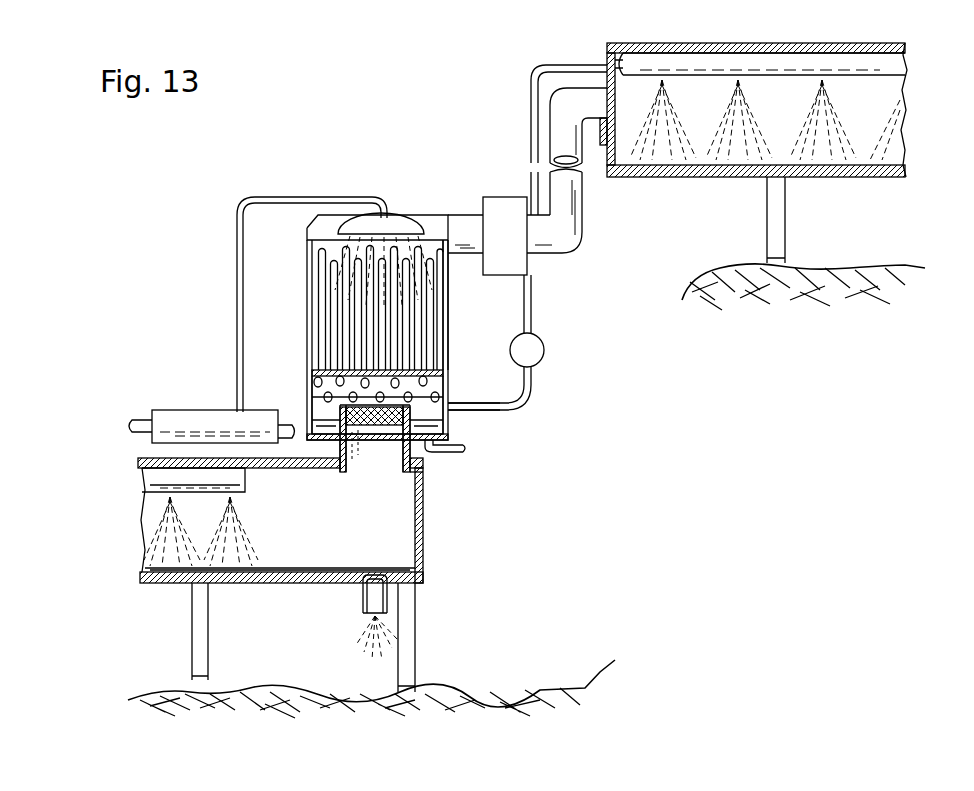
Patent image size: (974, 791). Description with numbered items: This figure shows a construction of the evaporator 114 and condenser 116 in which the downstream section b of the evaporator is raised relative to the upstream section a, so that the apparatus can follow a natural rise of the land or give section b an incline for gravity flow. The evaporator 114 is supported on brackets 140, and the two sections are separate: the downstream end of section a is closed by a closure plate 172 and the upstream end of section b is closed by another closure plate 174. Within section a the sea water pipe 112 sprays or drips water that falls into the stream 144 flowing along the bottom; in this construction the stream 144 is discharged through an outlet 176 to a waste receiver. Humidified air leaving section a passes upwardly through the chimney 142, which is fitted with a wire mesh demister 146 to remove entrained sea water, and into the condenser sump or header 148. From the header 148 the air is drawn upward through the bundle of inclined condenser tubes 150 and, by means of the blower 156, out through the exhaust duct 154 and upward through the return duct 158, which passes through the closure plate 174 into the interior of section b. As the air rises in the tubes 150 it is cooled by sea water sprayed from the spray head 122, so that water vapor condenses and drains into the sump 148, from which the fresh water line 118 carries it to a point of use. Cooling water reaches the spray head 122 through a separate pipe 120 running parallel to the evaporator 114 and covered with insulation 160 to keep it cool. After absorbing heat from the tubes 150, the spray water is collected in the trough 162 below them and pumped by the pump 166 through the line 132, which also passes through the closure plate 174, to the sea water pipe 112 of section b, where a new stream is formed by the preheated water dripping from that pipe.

The sea water pipe 112 is at (905, 68).
The evaporator 114 is at (765, 43).
The condenser 116 is at (318, 181).
The fresh water line 118 is at (437, 455).
The pipe 120 is at (140, 420).
The spray head 122 is at (395, 213).
The line 132 is at (533, 396).
The brackets 140 is at (778, 220).
The chimney 142 is at (338, 450).
The stream 144 is at (283, 572).
The wire mesh demister 146 is at (450, 413).
The condenser sump or header 148 is at (306, 385).
The condenser tubes 150 is at (350, 312).
The exhaust duct 154 is at (463, 213).
The blower 156 is at (489, 197).
The return duct 158 is at (578, 240).
The insulation 160 is at (207, 412).
The trough 162 is at (449, 347).
The pump 166 is at (543, 355).
The closure plate 172 is at (424, 518).
The closure plate 174 is at (606, 150).
The outlet 176 is at (362, 598).
The upstream evaporator section a is at (150, 460).
The downstream evaporator section b is at (880, 60).